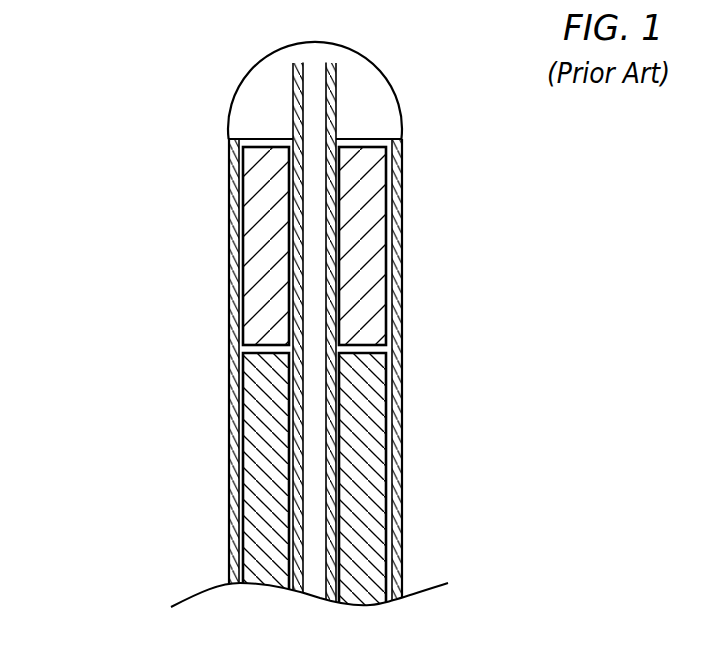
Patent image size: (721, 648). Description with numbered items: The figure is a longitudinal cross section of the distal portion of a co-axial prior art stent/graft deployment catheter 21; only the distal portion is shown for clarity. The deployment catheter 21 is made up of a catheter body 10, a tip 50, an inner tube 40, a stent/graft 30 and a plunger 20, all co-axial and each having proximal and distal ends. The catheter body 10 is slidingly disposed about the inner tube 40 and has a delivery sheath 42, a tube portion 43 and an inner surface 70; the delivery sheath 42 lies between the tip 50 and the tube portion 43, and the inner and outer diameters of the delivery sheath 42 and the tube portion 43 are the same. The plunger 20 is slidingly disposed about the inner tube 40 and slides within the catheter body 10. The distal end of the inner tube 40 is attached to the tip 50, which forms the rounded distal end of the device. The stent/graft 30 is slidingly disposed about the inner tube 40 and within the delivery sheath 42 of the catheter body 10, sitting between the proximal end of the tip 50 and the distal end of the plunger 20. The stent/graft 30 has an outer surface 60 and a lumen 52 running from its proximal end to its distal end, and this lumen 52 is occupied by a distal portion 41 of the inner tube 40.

The catheter body 10 is at (403, 293).
The plunger 20 is at (378, 468).
The stent/graft deployment catheter 21 is at (202, 92).
The stent/graft 30 is at (367, 239).
The inner tube 40 is at (337, 85).
The distal portion of the inner tube 41 is at (290, 170).
The delivery sheath 42 is at (230, 238).
The tube portion 43 is at (230, 467).
The tip 50 is at (380, 89).
The lumen 52 is at (312, 153).
The outer surface 60 is at (385, 222).
The inner surface 70 is at (238, 223).